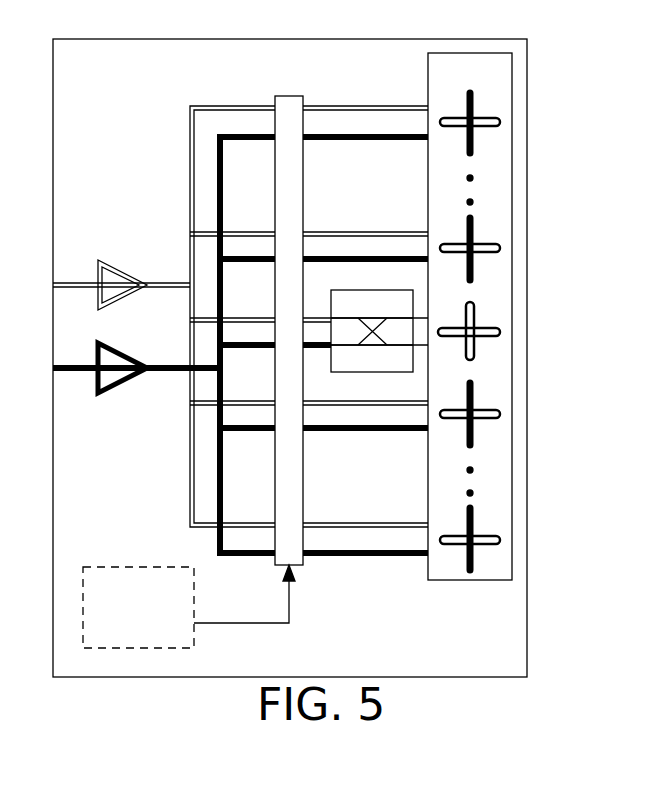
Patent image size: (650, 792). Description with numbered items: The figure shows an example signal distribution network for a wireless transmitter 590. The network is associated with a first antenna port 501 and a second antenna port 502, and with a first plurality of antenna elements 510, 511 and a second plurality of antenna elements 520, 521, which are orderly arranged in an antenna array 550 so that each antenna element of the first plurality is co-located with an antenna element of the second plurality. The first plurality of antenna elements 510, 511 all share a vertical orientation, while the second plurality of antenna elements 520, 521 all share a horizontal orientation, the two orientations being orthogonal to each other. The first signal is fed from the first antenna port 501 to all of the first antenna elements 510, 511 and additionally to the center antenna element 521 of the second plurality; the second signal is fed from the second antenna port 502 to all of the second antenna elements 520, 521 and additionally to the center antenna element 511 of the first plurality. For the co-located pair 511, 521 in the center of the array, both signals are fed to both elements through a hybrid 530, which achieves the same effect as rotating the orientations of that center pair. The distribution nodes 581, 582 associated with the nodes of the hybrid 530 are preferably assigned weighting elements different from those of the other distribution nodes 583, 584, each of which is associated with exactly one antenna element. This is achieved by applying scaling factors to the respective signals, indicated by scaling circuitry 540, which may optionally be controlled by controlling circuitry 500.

The wireless transmitter 590 is at (290, 358).
The controlling circuitry 500 is at (189, 606).
The first antenna port 501 is at (100, 285).
The second antenna port 502 is at (115, 368).
The antenna element of the first plurality 510 is at (498, 120).
The center antenna element of the first plurality 511 is at (500, 330).
The antenna element of the second plurality 520 is at (475, 95).
The center antenna element of the second plurality 521 is at (472, 302).
The hybrid 530 is at (358, 372).
The scaling circuitry 540 is at (287, 96).
The antenna array 550 is at (470, 316).
The distribution node 581 is at (327, 315).
The distribution node 582 is at (325, 347).
The distribution node 583 is at (418, 142).
The distribution node 584 is at (427, 112).